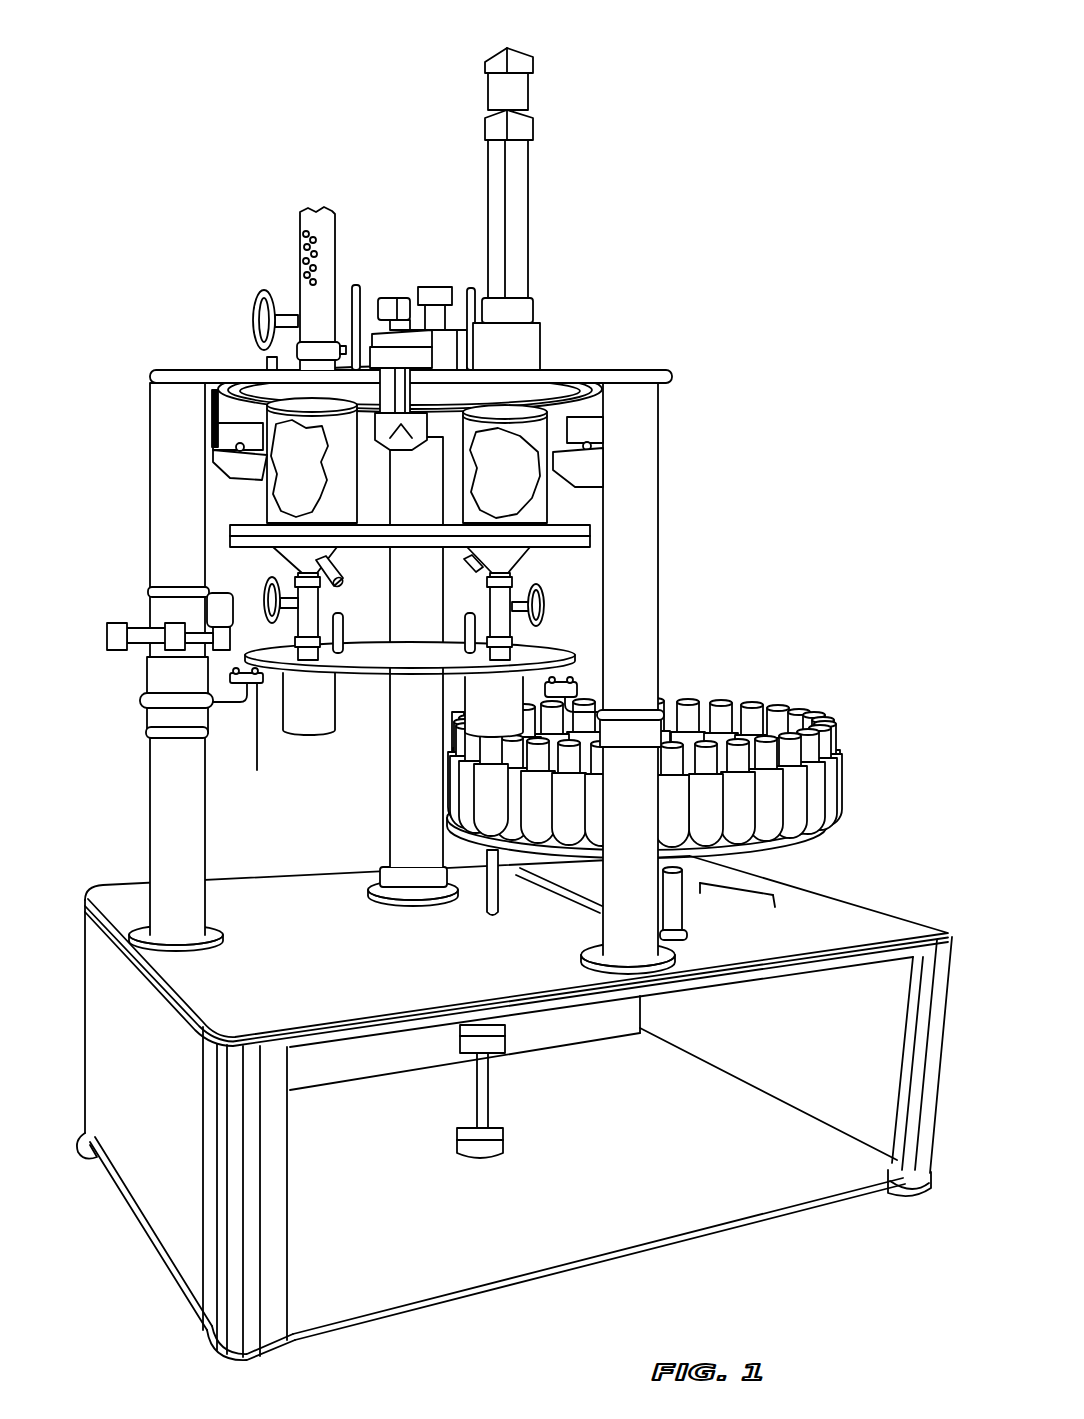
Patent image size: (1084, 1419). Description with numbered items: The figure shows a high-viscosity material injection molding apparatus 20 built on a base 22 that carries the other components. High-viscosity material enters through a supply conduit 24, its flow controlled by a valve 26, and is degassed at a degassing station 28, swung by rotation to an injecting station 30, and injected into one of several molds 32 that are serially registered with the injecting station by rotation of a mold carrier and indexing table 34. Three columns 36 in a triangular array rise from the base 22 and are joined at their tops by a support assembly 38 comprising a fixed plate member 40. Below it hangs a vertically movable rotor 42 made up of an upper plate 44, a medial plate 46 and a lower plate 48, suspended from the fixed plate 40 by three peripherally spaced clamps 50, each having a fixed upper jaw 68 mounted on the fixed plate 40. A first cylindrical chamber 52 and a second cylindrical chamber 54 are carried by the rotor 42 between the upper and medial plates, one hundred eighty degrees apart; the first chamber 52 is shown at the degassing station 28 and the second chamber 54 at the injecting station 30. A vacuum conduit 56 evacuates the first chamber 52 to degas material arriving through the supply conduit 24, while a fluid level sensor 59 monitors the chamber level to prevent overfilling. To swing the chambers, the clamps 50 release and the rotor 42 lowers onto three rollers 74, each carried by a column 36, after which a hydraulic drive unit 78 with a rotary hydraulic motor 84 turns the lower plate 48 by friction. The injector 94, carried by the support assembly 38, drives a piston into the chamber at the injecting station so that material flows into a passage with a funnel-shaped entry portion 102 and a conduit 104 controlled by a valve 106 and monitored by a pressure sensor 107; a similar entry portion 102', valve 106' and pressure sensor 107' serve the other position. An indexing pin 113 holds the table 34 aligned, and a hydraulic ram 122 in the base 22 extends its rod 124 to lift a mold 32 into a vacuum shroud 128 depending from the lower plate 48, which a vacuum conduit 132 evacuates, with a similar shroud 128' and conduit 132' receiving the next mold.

The high-viscosity material injection molding apparatus 20 is at (808, 442).
The base 22 is at (282, 1356).
The supply conduit 24 is at (337, 230).
The valve 26 is at (260, 313).
The degassing station 28 is at (223, 497).
The injecting station 30 is at (593, 503).
The mold 32 is at (492, 752).
The mold carrier and indexing table 34 is at (830, 829).
The column 36 is at (150, 830).
The support assembly 38 is at (643, 366).
The fixed plate member 40 is at (565, 383).
The rotor 42 is at (580, 550).
The upper plate 44 is at (550, 383).
The medial plate 46 is at (605, 530).
The lower plate 48 is at (575, 647).
The clamp 50 is at (410, 335).
The first cylindrical chamber 52 is at (342, 477).
The second cylindrical chamber 54 is at (607, 488).
The vacuum conduit 56 is at (353, 287).
The fluid level sensor 59 is at (263, 363).
The fixed upper jaw 68 is at (466, 290).
The roller 74 is at (258, 765).
The hydraulic drive unit 78 is at (102, 635).
The rotary hydraulic motor 84 is at (220, 610).
The injector 94 is at (540, 197).
The funnel-shaped entry portion 102 is at (525, 562).
The funnel-shaped entry portion 102' is at (331, 560).
The conduit 104 is at (307, 627).
The valve 106 is at (555, 605).
The valve 106' is at (258, 588).
The pressure sensor 107 is at (444, 560).
The pressure sensor 107' is at (352, 584).
The indexing pin 113 is at (682, 872).
The hydraulic ram 122 is at (480, 1082).
The rod 124 is at (496, 897).
The vacuum shroud 128 is at (499, 707).
The vacuum shroud 128' is at (309, 724).
The vacuum conduit 132 is at (439, 628).
The vacuum conduit 132' is at (376, 640).